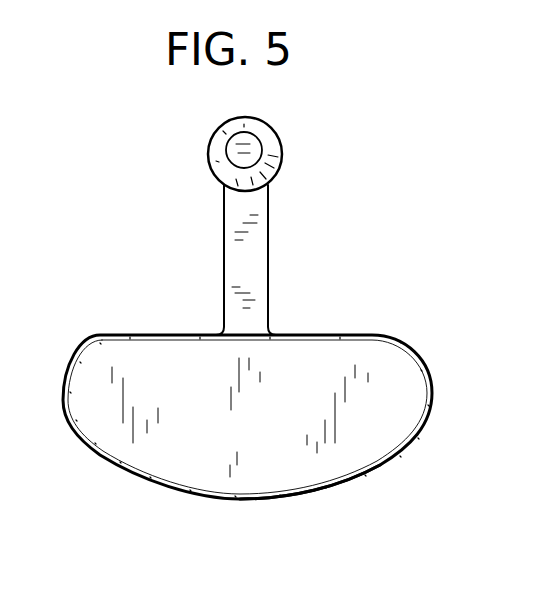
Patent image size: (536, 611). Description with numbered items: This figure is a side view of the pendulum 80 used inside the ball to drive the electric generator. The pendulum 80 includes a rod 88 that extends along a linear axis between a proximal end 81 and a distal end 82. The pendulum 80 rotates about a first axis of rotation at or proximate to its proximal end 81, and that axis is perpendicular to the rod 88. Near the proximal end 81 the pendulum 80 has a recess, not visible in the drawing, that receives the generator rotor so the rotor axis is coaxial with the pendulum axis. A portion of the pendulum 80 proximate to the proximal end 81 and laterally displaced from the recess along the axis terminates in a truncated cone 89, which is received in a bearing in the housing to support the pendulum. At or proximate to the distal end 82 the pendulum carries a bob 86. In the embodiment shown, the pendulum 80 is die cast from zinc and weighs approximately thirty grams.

The pendulum 80 is at (319, 226).
The proximal end 81 is at (208, 150).
The distal end 82 is at (268, 494).
The bob 86 is at (325, 464).
The rod 88 is at (235, 277).
The truncated cone 89 is at (254, 142).